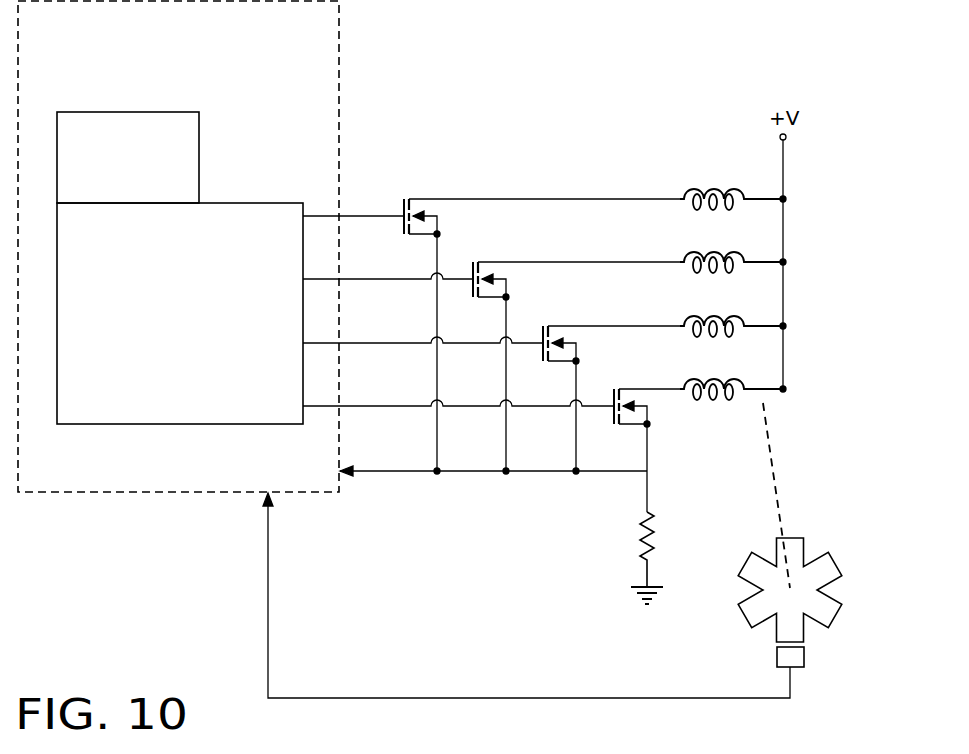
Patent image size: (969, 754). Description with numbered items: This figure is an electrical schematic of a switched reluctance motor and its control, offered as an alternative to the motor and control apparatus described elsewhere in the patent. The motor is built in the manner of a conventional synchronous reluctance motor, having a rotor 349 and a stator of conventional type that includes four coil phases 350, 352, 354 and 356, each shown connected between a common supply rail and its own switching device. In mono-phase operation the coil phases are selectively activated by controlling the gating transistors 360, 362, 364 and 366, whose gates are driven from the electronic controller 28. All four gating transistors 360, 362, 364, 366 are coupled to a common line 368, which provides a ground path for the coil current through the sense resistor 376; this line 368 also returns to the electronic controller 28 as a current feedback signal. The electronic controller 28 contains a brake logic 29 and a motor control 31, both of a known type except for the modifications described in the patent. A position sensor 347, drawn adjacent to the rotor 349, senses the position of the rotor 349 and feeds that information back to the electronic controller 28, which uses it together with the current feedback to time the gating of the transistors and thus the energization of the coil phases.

The electronic controller 28 is at (328, 35).
The brake logic 29 is at (189, 170).
The motor control 31 is at (278, 215).
The position sensor 347 is at (778, 660).
The rotor 349 is at (822, 565).
The coil phase 350 is at (718, 190).
The coil phase 352 is at (702, 250).
The coil phase 354 is at (720, 318).
The coil phase 356 is at (723, 398).
The gating transistor 360 is at (404, 200).
The gating transistor 362 is at (473, 265).
The gating transistor 364 is at (543, 330).
The gating transistor 366 is at (614, 392).
The line 368 is at (475, 473).
The sense resistor 376 is at (645, 540).